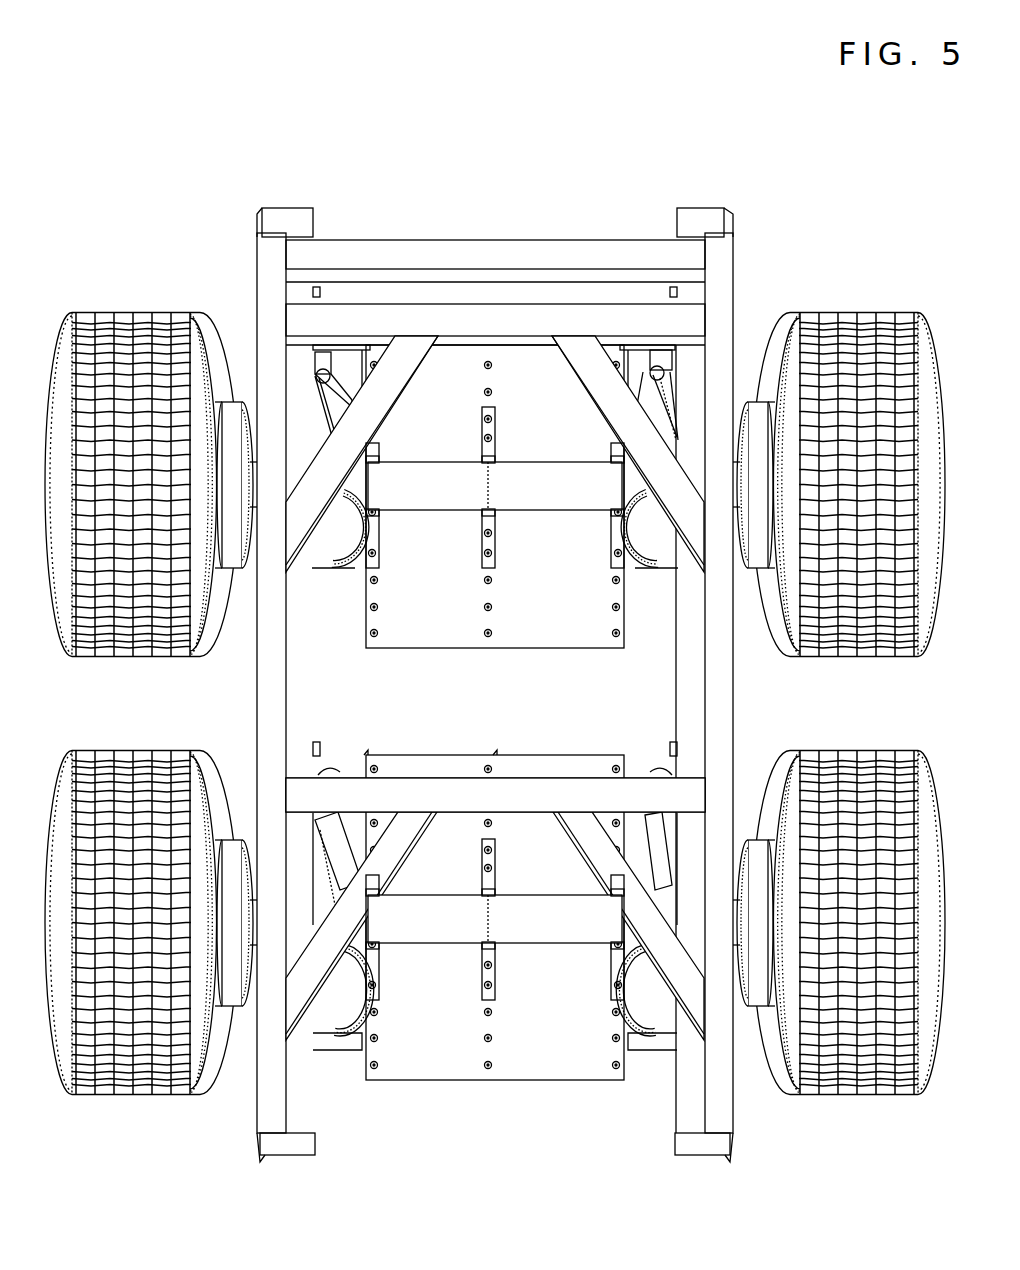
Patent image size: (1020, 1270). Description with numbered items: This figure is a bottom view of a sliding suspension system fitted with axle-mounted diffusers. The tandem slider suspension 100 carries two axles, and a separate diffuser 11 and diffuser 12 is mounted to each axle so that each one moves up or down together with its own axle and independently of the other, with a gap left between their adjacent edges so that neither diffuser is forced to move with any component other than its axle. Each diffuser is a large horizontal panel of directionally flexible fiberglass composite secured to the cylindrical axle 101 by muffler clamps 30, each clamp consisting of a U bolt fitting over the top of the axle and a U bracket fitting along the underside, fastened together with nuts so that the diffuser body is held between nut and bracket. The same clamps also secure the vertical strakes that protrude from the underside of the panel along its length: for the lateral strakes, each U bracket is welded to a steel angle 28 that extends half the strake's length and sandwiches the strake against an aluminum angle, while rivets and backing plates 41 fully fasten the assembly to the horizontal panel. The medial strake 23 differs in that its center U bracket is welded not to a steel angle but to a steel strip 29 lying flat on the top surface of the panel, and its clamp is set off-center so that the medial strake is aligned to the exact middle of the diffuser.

The tandem slider suspension 100 is at (676, 741).
The diffuser 11 is at (495, 496).
The diffuser 12 is at (494, 931).
The axle 101 is at (495, 486).
The steel angle 28 is at (379, 546).
The steel strip 29 is at (496, 546).
The medial strake 23 is at (496, 861).
The muffler clamp 30 is at (483, 921).
The backing plate 41 is at (488, 1070).